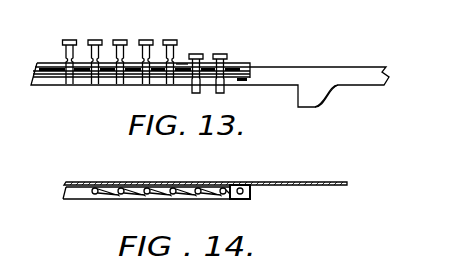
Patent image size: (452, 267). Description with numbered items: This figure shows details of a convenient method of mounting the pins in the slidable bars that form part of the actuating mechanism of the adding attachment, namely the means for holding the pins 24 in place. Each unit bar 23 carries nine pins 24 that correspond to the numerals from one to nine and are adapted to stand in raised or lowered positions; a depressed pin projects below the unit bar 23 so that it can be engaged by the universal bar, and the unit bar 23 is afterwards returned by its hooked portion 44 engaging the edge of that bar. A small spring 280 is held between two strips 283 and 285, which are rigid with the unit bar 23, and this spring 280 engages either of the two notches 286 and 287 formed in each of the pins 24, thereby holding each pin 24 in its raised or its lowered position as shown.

In FIG. 13, the unit bar 23 is at (318, 67).
In FIG. 14, the unit bar 23 is at (313, 182).
In FIG. 13, the pin 24 is at (101, 42).
In FIG. 14, the pin 24 is at (95, 187).
In FIG. 13, the hooked portion 44 is at (317, 103).
In FIG. 14, the spring 280 is at (193, 188).
In FIG. 13, the strip 283 is at (237, 65).
In FIG. 13, the strip 285 is at (238, 80).
In FIG. 14, the strip 285 is at (232, 198).
In FIG. 13, the notch 286 is at (172, 70).
In FIG. 13, the notch 287 is at (177, 65).